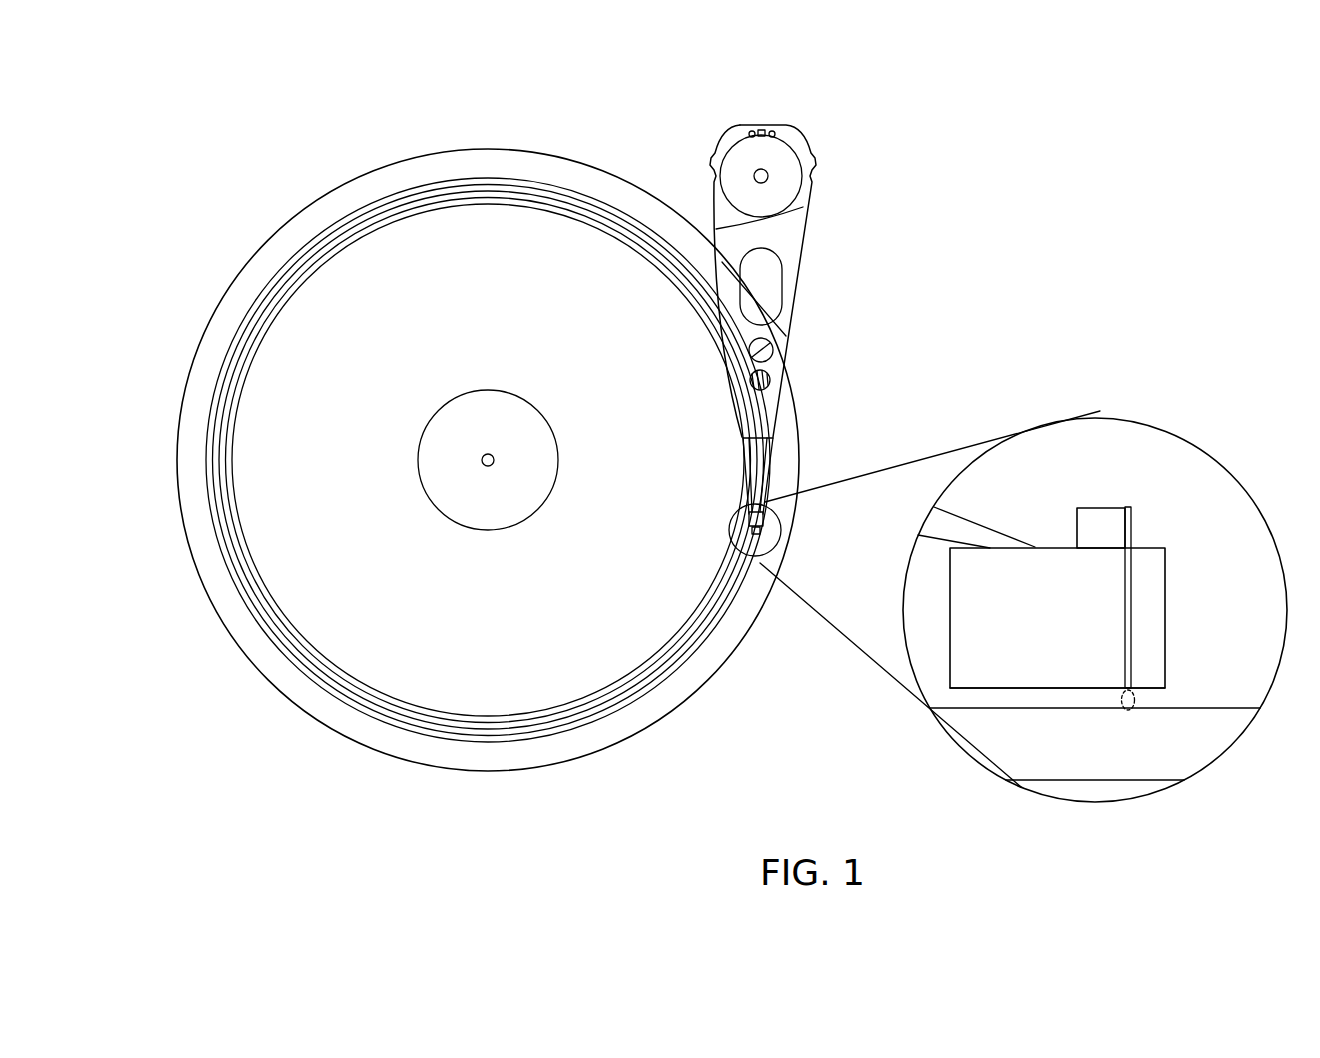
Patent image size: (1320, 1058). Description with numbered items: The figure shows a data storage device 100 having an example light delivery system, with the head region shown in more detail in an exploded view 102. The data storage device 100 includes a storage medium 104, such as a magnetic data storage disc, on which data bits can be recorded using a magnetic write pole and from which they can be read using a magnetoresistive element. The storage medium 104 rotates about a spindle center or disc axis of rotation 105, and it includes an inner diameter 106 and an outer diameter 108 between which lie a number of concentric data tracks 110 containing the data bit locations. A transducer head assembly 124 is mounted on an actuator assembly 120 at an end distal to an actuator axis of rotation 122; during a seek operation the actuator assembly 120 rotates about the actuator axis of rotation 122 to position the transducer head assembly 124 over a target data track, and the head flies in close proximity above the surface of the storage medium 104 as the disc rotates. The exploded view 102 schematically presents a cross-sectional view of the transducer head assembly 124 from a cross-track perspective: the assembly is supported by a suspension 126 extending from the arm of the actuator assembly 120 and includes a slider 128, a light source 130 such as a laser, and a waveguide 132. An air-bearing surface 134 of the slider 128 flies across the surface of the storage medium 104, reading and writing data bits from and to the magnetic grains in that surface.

The data storage device 100 is at (250, 130).
The exploded view 102 is at (1085, 420).
The storage medium 104 is at (567, 160).
The disc axis of rotation 105 is at (485, 458).
The inner diameter 106 is at (457, 393).
The outer diameter 108 is at (375, 197).
The data tracks 110 is at (660, 683).
The actuator assembly 120 is at (820, 252).
The actuator axis of rotation 122 is at (768, 175).
The transducer head assembly 124 is at (763, 525).
The suspension 126 is at (753, 515).
The slider 128 is at (972, 641).
The light source 130 is at (1102, 528).
The waveguide 132 is at (1132, 620).
The air-bearing surface 134 is at (973, 690).